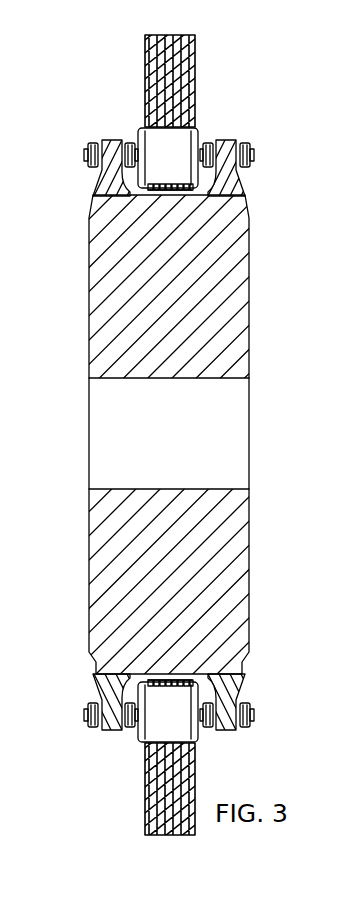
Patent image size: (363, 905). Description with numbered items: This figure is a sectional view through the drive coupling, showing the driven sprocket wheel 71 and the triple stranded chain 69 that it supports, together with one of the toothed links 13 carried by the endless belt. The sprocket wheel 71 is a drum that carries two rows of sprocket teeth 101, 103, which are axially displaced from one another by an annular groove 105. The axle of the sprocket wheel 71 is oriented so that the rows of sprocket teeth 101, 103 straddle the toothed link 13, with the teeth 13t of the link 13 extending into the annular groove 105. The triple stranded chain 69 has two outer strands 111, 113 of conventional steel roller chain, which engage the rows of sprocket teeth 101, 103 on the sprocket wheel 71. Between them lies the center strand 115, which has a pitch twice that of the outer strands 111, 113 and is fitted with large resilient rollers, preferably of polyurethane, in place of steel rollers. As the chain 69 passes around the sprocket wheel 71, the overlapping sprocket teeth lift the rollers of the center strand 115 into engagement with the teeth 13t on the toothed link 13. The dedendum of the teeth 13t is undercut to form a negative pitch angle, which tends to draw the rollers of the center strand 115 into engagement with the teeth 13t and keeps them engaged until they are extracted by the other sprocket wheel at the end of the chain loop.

The toothed link 13 is at (196, 56).
The teeth of the links 13t is at (244, 201).
The triple stranded chain 69 is at (101, 100).
The driven sprocket wheel 71 is at (250, 364).
The row of sprocket teeth 101 is at (95, 166).
The row of sprocket teeth 103 is at (238, 190).
The annular groove 105 is at (112, 196).
The outer strand 111 is at (92, 727).
The outer strand 113 is at (240, 728).
The center strand 115 is at (198, 742).